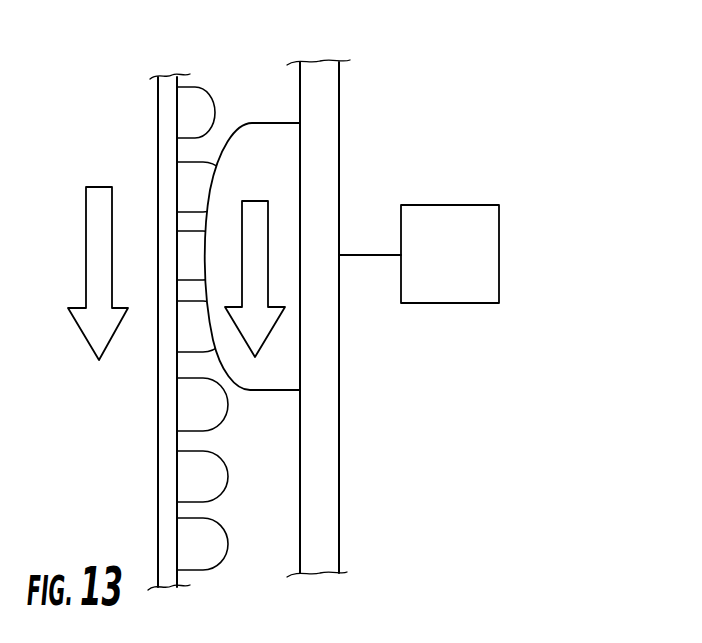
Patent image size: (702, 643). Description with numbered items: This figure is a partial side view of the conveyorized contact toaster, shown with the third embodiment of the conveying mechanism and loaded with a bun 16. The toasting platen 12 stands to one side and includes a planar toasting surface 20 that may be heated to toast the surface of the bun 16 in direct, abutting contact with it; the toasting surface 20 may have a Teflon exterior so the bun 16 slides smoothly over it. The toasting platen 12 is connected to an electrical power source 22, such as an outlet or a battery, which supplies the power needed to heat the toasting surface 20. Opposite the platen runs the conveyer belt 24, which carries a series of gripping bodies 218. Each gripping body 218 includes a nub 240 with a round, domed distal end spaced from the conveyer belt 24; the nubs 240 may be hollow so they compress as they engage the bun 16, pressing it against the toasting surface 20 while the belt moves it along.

The toasting platen 12 is at (343, 87).
The bun 16 is at (259, 373).
The toasting surface 20 is at (297, 542).
The electrical power source 22 is at (454, 205).
The conveyer belt 24 is at (164, 170).
The gripping body 218 is at (256, 289).
The nub 240 is at (197, 87).